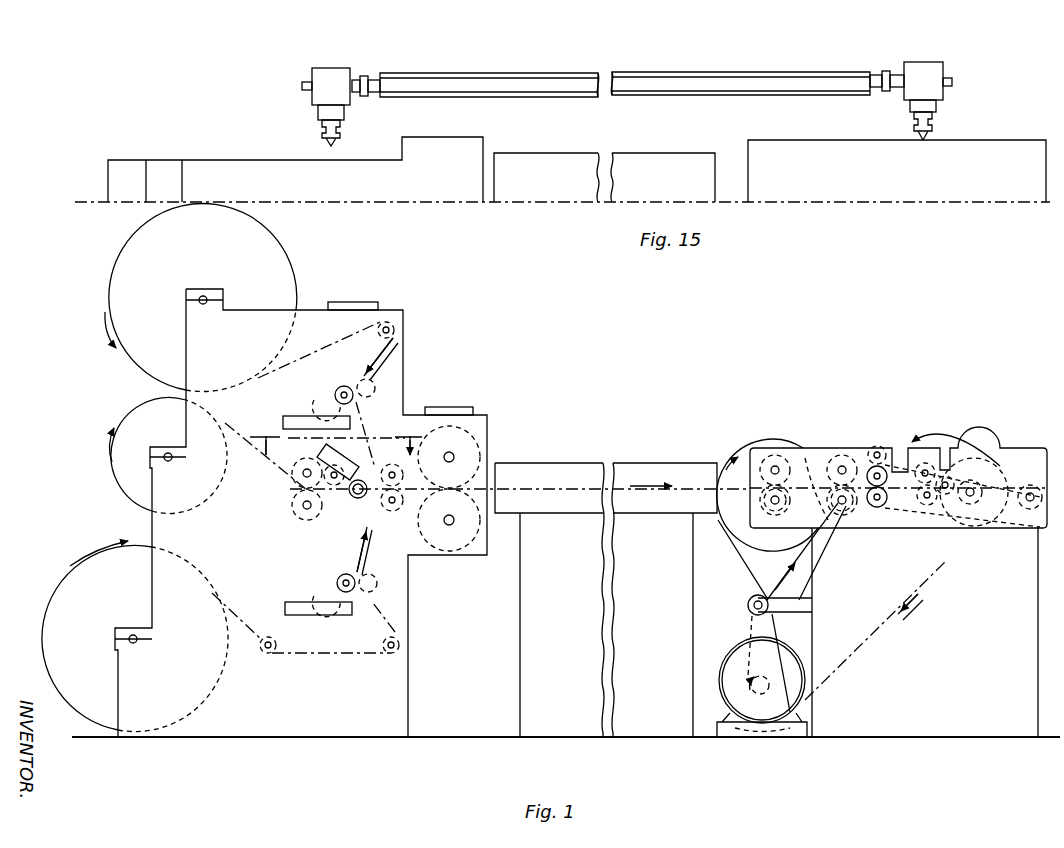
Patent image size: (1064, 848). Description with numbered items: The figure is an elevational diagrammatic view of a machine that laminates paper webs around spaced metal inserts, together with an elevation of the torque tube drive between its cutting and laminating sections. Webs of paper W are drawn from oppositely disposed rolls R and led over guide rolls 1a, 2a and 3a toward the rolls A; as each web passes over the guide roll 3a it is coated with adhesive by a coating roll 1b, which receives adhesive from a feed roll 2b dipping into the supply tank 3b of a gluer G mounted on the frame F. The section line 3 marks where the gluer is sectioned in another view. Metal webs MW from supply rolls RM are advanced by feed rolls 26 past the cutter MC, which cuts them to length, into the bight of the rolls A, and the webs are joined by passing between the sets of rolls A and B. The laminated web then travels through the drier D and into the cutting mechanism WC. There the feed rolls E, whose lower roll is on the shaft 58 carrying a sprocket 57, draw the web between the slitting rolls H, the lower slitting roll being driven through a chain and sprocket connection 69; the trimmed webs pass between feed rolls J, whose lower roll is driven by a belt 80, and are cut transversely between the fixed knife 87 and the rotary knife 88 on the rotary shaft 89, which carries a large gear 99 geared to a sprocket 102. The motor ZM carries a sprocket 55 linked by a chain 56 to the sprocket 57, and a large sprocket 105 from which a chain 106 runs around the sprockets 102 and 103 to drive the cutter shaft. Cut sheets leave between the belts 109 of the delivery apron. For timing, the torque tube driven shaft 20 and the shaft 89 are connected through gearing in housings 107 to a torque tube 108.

In FIG. 15, the housings 107 is at (312, 72).
In FIG. 15, the torque tube 108 is at (626, 56).
In FIG. 15, the torque tube driven shaft 20 is at (328, 143).
In FIG. 15, the rotary shaft 89 is at (924, 141).
In FIG. 15, the frame F is at (456, 150).
In FIG. 1, the frame F is at (410, 686).
In FIG. 15, the drier D is at (585, 162).
In FIG. 1, the drier D is at (632, 470).
In FIG. 15, the cutting mechanism WC is at (858, 158).
In FIG. 1, the cutting mechanism WC is at (822, 456).
In FIG. 1, the rolls R is at (117, 265).
In FIG. 1, the supply rolls RM is at (122, 487).
In FIG. 1, the webs of paper W is at (318, 350).
In FIG. 1, the metal webs MW is at (280, 458).
In FIG. 1, the section line 3 is at (336, 435).
In FIG. 1, the guide roll 2a is at (396, 323).
In FIG. 1, the coating roll 1b is at (345, 386).
In FIG. 1, the guide roll 3a is at (372, 389).
In FIG. 1, the feed roll 2b is at (326, 396).
In FIG. 1, the gluer G is at (306, 416).
In FIG. 1, the supply tank 3b is at (286, 606).
In FIG. 1, the feed rolls 26 is at (307, 452).
In FIG. 1, the cutter MC is at (368, 494).
In FIG. 1, the rolls A is at (393, 464).
In FIG. 1, the rolls B is at (470, 436).
In FIG. 1, the guide roll 1a is at (278, 650).
In FIG. 1, the feed rolls E is at (775, 455).
In FIG. 1, the slitting rolls H is at (845, 454).
In FIG. 1, the sprocket 57 is at (750, 545).
In FIG. 1, the shaft 58 is at (783, 518).
In FIG. 1, the chain and sprocket connection 69 is at (815, 505).
In FIG. 1, the sprocket 103 is at (875, 445).
In FIG. 1, the feed rolls J is at (884, 467).
In FIG. 1, the fixed knife 87 is at (920, 515).
In FIG. 1, the belt 80 is at (872, 522).
In FIG. 1, the knife 88 is at (915, 440).
In FIG. 1, the large gear 99 is at (955, 448).
In FIG. 1, the sprocket 102 is at (978, 458).
In FIG. 1, the belts 109 is at (1028, 490).
In FIG. 1, the chain 56 is at (810, 602).
In FIG. 1, the chain 106 is at (746, 618).
In FIG. 1, the large sprocket 105 is at (724, 652).
In FIG. 1, the sprocket 55 is at (752, 678).
In FIG. 1, the motor ZM is at (763, 712).